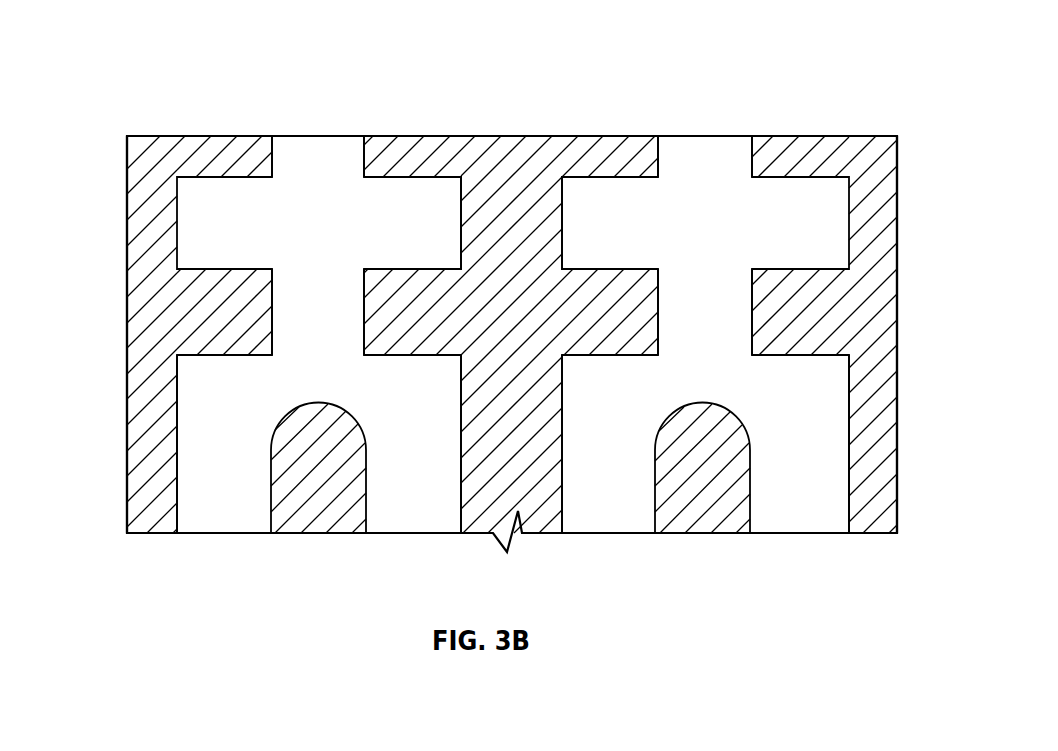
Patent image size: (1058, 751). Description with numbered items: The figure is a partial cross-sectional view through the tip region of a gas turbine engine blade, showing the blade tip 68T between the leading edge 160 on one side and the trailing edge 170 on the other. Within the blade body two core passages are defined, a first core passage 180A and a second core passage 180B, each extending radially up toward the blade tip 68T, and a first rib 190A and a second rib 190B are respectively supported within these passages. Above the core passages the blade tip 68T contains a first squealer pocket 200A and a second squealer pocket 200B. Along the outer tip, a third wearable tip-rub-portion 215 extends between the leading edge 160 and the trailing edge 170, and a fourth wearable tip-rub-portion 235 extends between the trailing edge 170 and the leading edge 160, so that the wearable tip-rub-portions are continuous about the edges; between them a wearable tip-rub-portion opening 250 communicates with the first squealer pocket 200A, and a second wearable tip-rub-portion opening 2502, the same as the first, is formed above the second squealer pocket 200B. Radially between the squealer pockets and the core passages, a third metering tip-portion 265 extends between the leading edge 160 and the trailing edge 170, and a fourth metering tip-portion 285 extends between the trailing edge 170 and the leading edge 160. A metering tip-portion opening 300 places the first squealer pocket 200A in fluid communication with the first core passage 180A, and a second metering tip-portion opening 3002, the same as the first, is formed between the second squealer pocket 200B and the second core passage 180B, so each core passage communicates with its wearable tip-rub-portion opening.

The blade tip 68T is at (125, 49).
The leading edge 160 is at (127, 478).
The trailing edge 170 is at (875, 492).
The first core passage 180A is at (218, 437).
The second core passage 180B is at (407, 482).
The first rib 190A is at (333, 427).
The second rib 190B is at (718, 427).
The first squealer pocket 200A is at (410, 200).
The second squealer pocket 200B is at (640, 197).
The third wearable tip-rub-portion 215 is at (193, 135).
The fourth wearable tip-rub-portion 235 is at (512, 135).
The wearable tip-rub-portion opening 250 is at (313, 135).
The second wearable tip-rub-portion opening 2502 is at (706, 135).
The third metering tip-portion 265 is at (240, 308).
The fourth metering tip-portion 285 is at (365, 340).
The metering tip-portion opening 300 is at (326, 290).
The second metering tip-portion opening 3002 is at (705, 300).